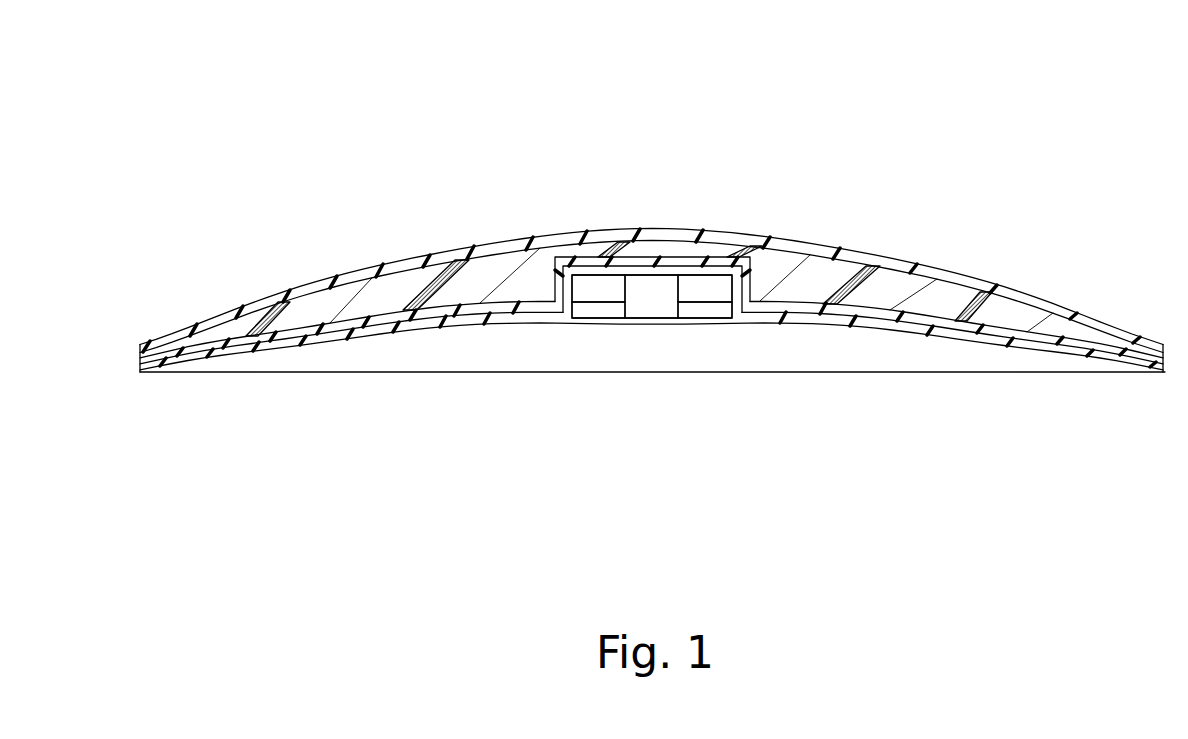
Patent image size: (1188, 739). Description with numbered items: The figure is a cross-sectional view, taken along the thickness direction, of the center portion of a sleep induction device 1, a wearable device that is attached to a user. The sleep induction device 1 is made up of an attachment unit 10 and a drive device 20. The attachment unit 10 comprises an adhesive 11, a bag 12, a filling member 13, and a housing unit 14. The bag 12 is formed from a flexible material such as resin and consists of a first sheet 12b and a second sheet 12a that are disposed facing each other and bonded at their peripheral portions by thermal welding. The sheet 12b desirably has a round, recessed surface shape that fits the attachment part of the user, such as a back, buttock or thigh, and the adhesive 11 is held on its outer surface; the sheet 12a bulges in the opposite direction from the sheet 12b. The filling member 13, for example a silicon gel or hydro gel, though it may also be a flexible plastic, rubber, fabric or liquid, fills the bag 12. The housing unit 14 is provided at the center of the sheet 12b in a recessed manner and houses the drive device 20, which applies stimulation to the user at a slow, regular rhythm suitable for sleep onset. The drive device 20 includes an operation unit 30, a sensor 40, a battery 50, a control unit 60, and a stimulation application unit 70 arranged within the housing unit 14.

The sleep induction device 1 is at (296, 158).
The attachment unit 10 is at (335, 271).
The adhesive 11 is at (417, 332).
The bag 12 is at (383, 268).
The sheet 12a is at (456, 250).
The sheet 12b is at (472, 325).
The filling member 13 is at (502, 270).
The housing unit 14 is at (575, 320).
The drive device 20 is at (721, 324).
The operation unit 30 is at (600, 313).
The sensor 40 is at (705, 313).
The battery 50 is at (598, 285).
The control unit 60 is at (708, 285).
The stimulation application unit 70 is at (652, 292).